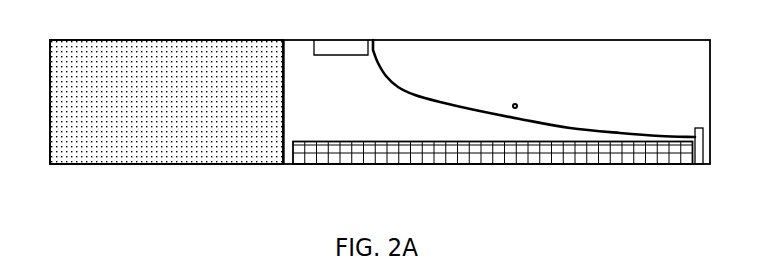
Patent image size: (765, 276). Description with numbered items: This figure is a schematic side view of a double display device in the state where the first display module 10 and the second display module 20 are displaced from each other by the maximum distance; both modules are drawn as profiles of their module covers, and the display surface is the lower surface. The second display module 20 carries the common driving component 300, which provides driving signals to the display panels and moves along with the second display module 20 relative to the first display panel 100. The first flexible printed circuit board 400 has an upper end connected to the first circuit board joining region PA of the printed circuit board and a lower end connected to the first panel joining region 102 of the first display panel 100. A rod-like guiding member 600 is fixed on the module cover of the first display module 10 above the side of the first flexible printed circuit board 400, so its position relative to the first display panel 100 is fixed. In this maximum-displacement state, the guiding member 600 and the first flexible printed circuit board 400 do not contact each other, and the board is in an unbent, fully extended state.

The first display module 10 is at (710, 93).
The second display module 20 is at (50, 103).
The first display panel 100 is at (553, 152).
The first panel joining region 102 is at (698, 128).
The common driving component 300 is at (337, 64).
The first flexible printed circuit board 400 is at (383, 75).
The guiding member 600 is at (518, 104).
The first circuit board joining region PA is at (369, 45).